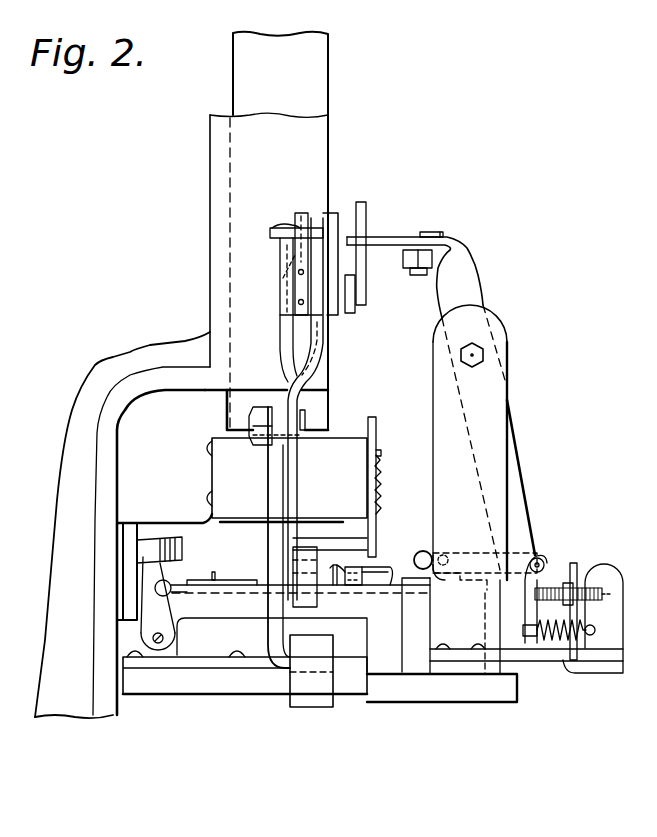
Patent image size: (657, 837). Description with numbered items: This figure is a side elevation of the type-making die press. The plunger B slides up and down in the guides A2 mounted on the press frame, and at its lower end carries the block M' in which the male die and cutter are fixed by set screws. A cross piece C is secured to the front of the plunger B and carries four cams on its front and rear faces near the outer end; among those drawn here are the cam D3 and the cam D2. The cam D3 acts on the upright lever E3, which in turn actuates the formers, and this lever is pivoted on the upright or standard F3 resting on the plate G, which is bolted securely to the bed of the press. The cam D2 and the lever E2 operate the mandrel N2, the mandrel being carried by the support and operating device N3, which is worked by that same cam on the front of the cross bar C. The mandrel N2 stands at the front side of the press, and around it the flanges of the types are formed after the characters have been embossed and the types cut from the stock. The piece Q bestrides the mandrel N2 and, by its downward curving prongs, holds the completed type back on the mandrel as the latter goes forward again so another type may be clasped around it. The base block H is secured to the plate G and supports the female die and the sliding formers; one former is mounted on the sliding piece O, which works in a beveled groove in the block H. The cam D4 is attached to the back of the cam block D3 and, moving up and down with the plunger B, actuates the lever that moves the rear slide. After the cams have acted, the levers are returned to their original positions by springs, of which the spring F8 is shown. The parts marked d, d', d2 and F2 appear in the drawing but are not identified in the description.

The plunger B is at (318, 82).
The guides A2 is at (216, 165).
The cam D3 is at (312, 210).
The cross piece C is at (336, 214).
The bar d2 is at (365, 206).
The cam D2 is at (372, 218).
The bolt d is at (390, 277).
The clamp piece d' is at (361, 252).
The lever E2 is at (472, 288).
The strap F2 is at (500, 428).
The upright lever E3 is at (305, 334).
The block M' is at (294, 468).
The upright or standard F3 is at (272, 545).
The cam D4 is at (143, 556).
The sliding piece O is at (295, 598).
The piece bestriding the mandrel Q is at (382, 580).
The base block H is at (226, 642).
The mandrel N2 is at (389, 588).
The mandrel support and operating device N3 is at (412, 656).
The plate G is at (437, 690).
The spring F8 is at (560, 633).